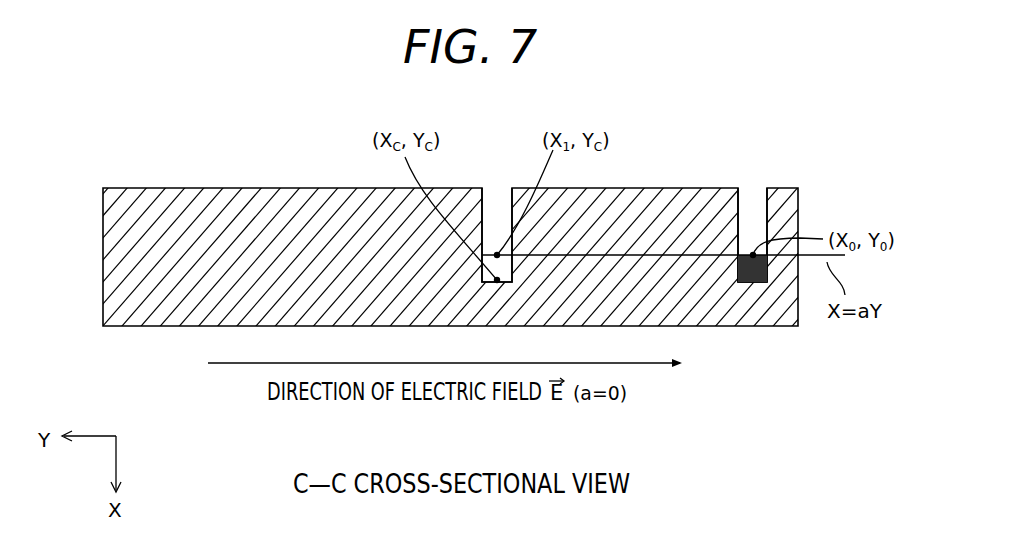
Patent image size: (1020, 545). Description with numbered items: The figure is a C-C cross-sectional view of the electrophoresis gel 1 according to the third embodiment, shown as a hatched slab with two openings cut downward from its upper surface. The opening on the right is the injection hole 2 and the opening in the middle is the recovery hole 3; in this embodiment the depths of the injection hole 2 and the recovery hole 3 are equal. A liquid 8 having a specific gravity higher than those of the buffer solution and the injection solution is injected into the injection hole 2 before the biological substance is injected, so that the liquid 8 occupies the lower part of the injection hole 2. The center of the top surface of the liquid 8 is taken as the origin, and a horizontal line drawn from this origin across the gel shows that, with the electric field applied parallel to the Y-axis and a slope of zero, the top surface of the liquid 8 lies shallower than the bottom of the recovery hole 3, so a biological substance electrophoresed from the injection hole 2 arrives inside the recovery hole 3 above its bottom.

The electrophoresis gel 1 is at (103, 297).
The injection hole 2 is at (755, 200).
The recovery hole 3 is at (496, 198).
The liquid 8 is at (755, 282).